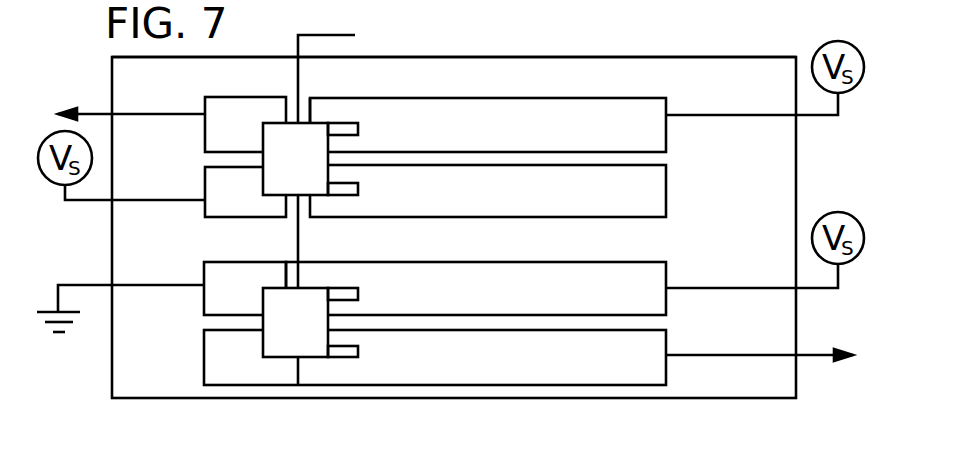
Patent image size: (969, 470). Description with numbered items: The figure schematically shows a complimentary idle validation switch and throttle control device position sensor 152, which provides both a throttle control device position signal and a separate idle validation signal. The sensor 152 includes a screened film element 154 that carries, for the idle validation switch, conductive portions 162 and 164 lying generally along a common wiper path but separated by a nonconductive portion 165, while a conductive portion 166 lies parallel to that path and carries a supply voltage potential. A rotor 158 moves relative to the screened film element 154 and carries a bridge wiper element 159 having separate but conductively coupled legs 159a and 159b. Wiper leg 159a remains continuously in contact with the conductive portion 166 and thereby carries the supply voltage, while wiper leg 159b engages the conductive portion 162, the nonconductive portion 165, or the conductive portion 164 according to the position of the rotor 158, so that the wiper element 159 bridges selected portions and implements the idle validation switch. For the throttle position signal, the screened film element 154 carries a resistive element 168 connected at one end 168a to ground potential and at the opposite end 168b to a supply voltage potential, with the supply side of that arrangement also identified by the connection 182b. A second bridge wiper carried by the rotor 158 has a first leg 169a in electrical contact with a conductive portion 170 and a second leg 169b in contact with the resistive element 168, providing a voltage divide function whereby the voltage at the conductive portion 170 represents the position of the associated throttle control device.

The complimentary idle validation switch and throttle control device position sensor 152 is at (490, 410).
The screened film element 154 is at (637, 57).
The rotor 158 is at (325, 35).
The bridge wiper element 159 is at (263, 160).
The wiper leg 159a is at (358, 190).
The wiper leg 159b is at (358, 129).
The conductive portion 162 is at (505, 98).
The conductive portion 164 is at (205, 107).
The nonconductive portion 165 is at (302, 108).
The conductive portion 166 is at (666, 198).
The resistive element 168 is at (525, 262).
The end of resistive element 168a is at (204, 270).
The end of resistive element 168b is at (666, 270).
The first leg 169a is at (358, 350).
The second leg 169b is at (358, 293).
The conductive portion 170 is at (666, 340).
The supply connection 182b is at (666, 107).